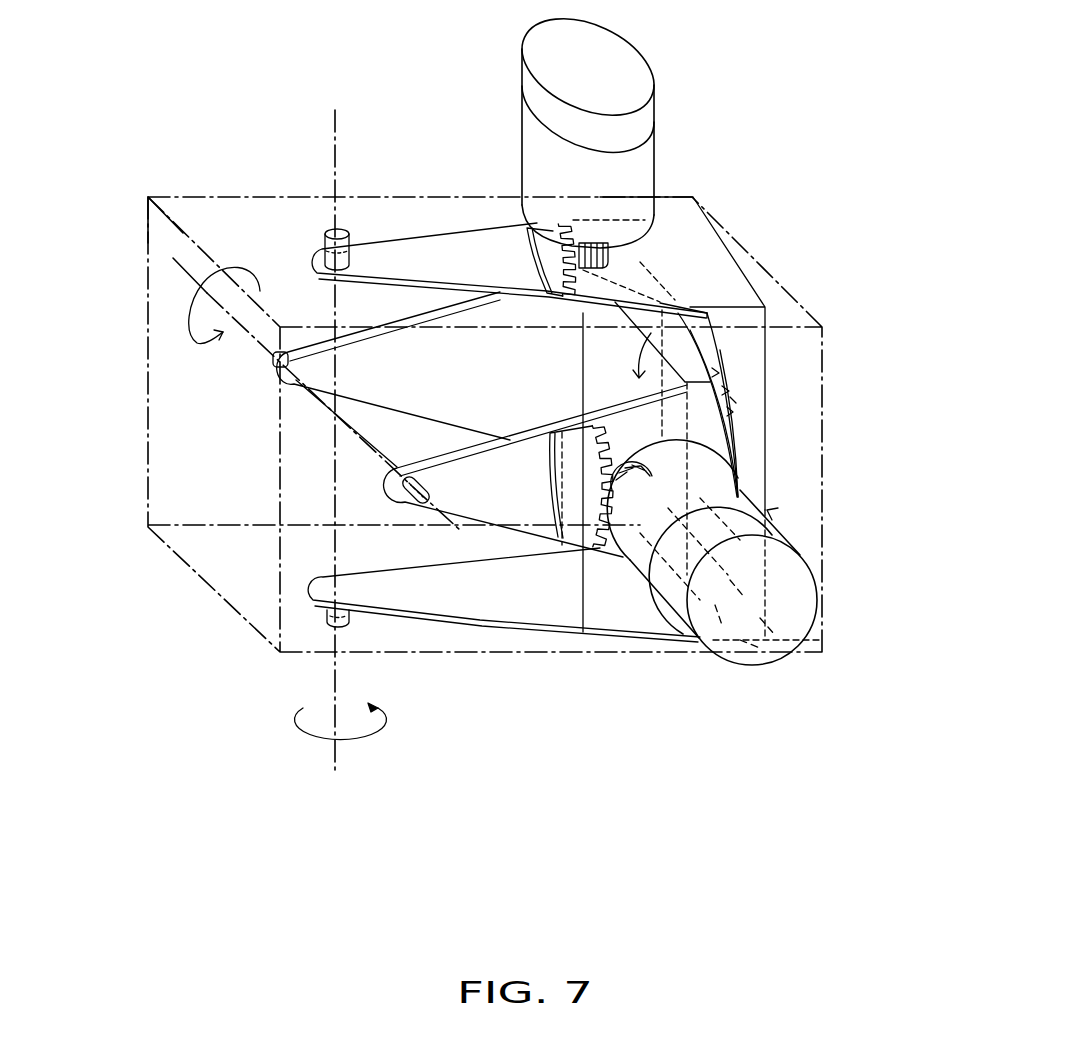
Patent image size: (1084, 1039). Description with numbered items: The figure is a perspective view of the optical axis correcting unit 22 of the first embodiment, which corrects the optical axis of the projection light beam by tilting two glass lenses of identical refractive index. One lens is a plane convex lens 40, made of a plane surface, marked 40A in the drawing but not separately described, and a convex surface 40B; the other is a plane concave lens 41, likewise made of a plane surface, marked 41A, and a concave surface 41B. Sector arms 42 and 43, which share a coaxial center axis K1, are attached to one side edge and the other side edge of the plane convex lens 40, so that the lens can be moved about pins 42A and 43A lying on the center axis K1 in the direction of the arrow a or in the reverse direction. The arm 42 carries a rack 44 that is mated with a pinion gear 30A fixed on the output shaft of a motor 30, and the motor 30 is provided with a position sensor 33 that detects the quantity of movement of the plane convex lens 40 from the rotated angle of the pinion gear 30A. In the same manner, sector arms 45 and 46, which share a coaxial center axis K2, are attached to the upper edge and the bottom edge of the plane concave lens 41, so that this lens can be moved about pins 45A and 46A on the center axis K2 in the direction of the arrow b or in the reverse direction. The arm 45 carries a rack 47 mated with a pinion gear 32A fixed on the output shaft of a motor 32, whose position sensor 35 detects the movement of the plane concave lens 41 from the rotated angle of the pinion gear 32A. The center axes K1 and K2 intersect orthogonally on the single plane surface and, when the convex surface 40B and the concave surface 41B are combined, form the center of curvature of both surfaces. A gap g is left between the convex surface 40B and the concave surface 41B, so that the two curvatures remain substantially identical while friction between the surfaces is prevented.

The optical axis correcting unit 22 is at (147, 242).
The motor 30 is at (640, 587).
The pinion gear 30A is at (690, 467).
The motor 32 is at (657, 173).
The pinion gear 32A is at (608, 258).
The position sensor 33 is at (803, 603).
The position sensor 35 is at (628, 60).
The plane convex lens 40 is at (713, 448).
The cam plate upper edge 40A is at (657, 328).
The convex surface 40B is at (730, 393).
The plane concave lens 41 is at (752, 387).
The cam groove lower end 41A is at (767, 510).
The concave surface 41B is at (722, 387).
The sector arm 42 is at (460, 530).
The pin 42A is at (410, 505).
The sector arm 43 is at (412, 350).
The pin 43A is at (280, 366).
The rack 44 is at (580, 632).
The sector arm 45 is at (407, 244).
The pin 45A is at (326, 252).
The sector arm 46 is at (515, 624).
The pin 46A is at (348, 625).
The rack 47 is at (540, 260).
The gap g is at (733, 403).
The center axis K1 is at (182, 275).
The center axis K2 is at (333, 131).
The arrow a is at (194, 345).
The arrow b is at (384, 726).